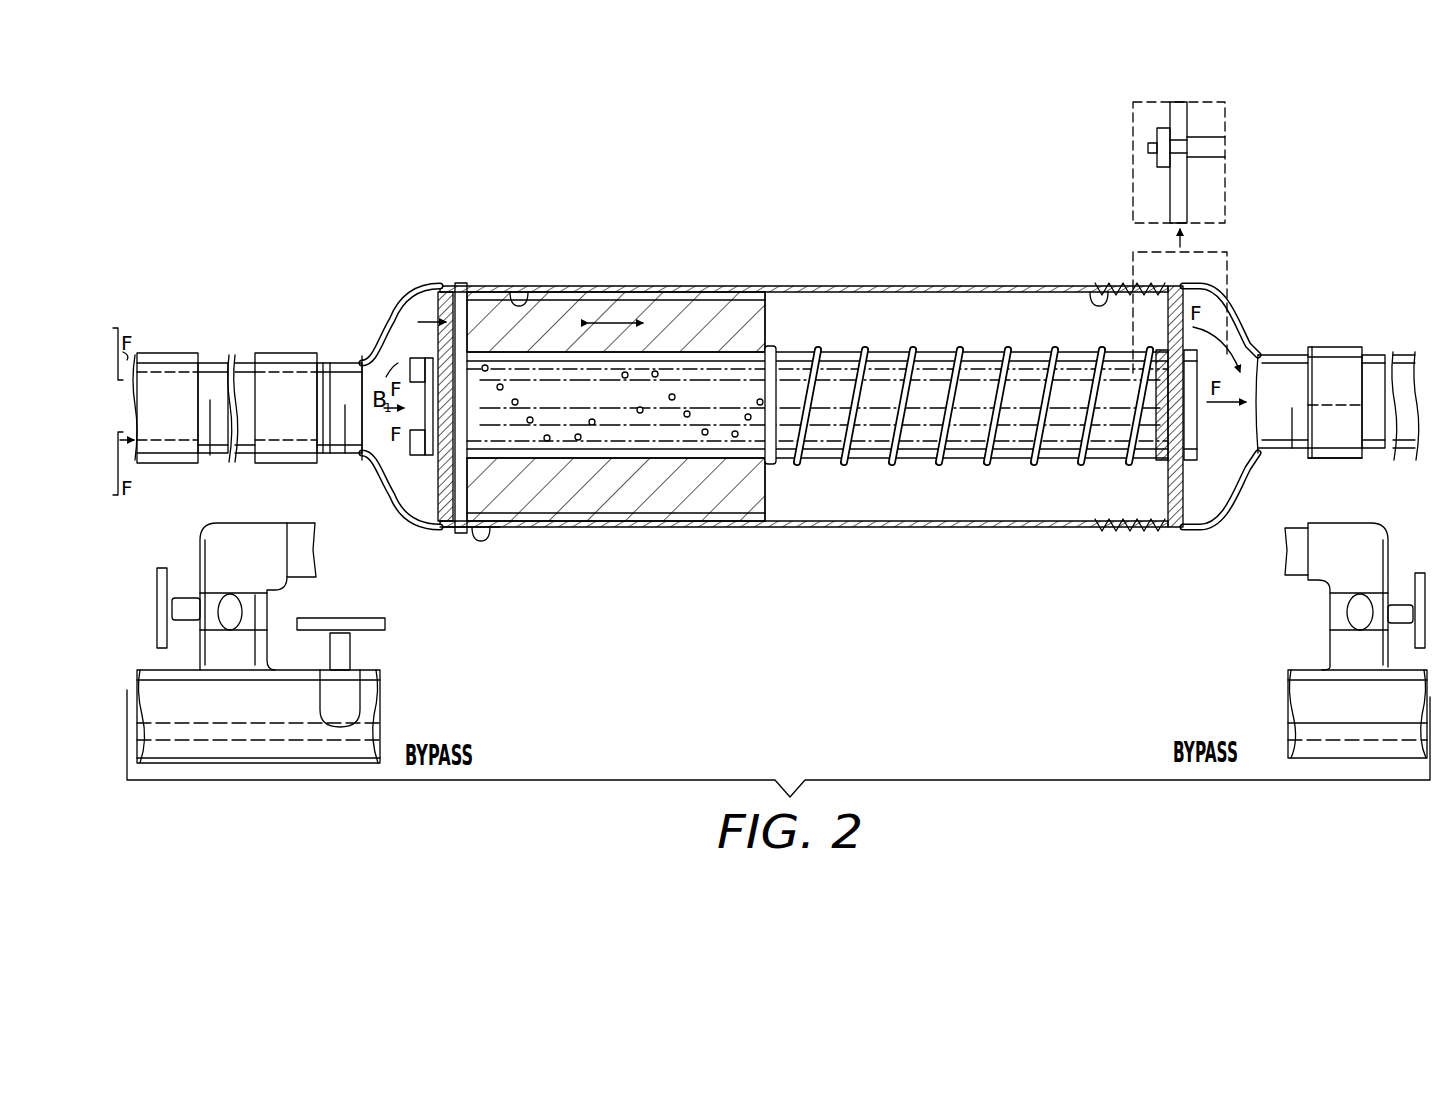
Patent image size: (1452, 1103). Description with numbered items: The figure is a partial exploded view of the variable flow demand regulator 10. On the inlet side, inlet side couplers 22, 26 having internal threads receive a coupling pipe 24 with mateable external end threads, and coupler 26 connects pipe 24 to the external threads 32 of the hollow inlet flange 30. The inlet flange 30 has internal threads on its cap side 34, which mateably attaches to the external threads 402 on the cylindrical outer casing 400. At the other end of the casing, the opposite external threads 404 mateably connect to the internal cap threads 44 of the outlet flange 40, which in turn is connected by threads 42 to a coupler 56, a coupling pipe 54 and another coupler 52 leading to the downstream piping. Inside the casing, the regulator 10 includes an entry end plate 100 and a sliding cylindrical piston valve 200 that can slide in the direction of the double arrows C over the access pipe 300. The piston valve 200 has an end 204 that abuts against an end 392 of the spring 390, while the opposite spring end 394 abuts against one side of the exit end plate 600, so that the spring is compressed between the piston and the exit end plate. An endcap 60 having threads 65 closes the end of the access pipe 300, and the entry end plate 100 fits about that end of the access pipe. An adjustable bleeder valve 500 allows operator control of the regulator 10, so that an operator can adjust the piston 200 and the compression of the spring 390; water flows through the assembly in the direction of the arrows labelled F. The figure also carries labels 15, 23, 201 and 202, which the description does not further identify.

The variable flow demand regulator 10 is at (388, 251).
The housing 15 is at (945, 295).
The inlet side coupler 22 is at (157, 363).
The inlet 23 is at (130, 435).
The coupling pipe 24 is at (240, 372).
The inlet side coupler 26 is at (283, 370).
The hollow inlet flange 30 is at (387, 360).
The external threads 32 is at (325, 427).
The cap side 34 is at (490, 529).
The outlet flange 40 is at (1232, 368).
The threads 42 is at (1298, 388).
The internal cap threads 44 is at (1138, 528).
The coupler 52 is at (1408, 443).
The coupling pipe 54 is at (1393, 352).
The coupler 56 is at (1340, 433).
The endcap 60 is at (428, 388).
The threads 65 is at (395, 447).
The entry end plate 100 is at (447, 290).
The sliding cylindrical piston valve 200 is at (613, 300).
The filter media 201 is at (677, 300).
The inlet gasket 202 is at (478, 528).
The end of piston valve 204 is at (768, 488).
The access pipe 300 is at (745, 365).
The spring 390 is at (937, 463).
The spring end 392 is at (772, 352).
The spring end 394 is at (1148, 463).
The cylindrical outer casing 400 is at (882, 290).
The external threads 402 is at (518, 292).
The external threads 404 is at (1098, 292).
The adjustable bleeder valve 500 is at (1198, 92).
The exit end plate 600 is at (1180, 528).